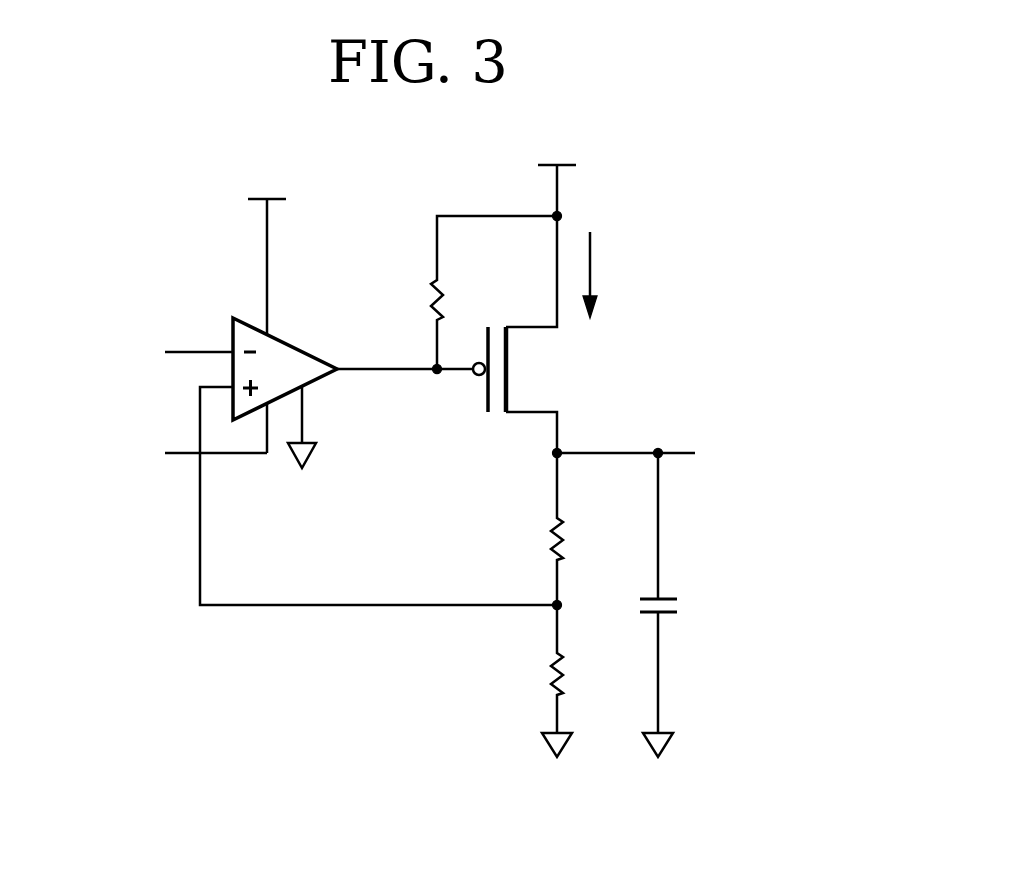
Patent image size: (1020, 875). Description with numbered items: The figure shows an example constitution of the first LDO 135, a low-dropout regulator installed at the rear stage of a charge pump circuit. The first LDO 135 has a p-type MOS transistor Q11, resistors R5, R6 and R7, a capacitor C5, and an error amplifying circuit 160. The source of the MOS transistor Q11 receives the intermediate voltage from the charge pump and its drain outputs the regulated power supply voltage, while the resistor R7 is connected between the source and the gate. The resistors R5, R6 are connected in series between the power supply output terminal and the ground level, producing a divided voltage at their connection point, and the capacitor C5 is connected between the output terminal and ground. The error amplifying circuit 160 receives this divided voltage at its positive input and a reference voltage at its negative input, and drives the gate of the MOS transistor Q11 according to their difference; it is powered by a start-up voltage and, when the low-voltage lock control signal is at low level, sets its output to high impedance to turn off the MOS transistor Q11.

The first LDO 135 is at (797, 189).
The error amplifying circuit 160 is at (285, 345).
The p-type MOS transistor Q11 is at (540, 334).
The resistor R7 is at (471, 292).
The resistor R5 is at (534, 529).
The resistor R6 is at (534, 669).
The capacitor C5 is at (685, 593).